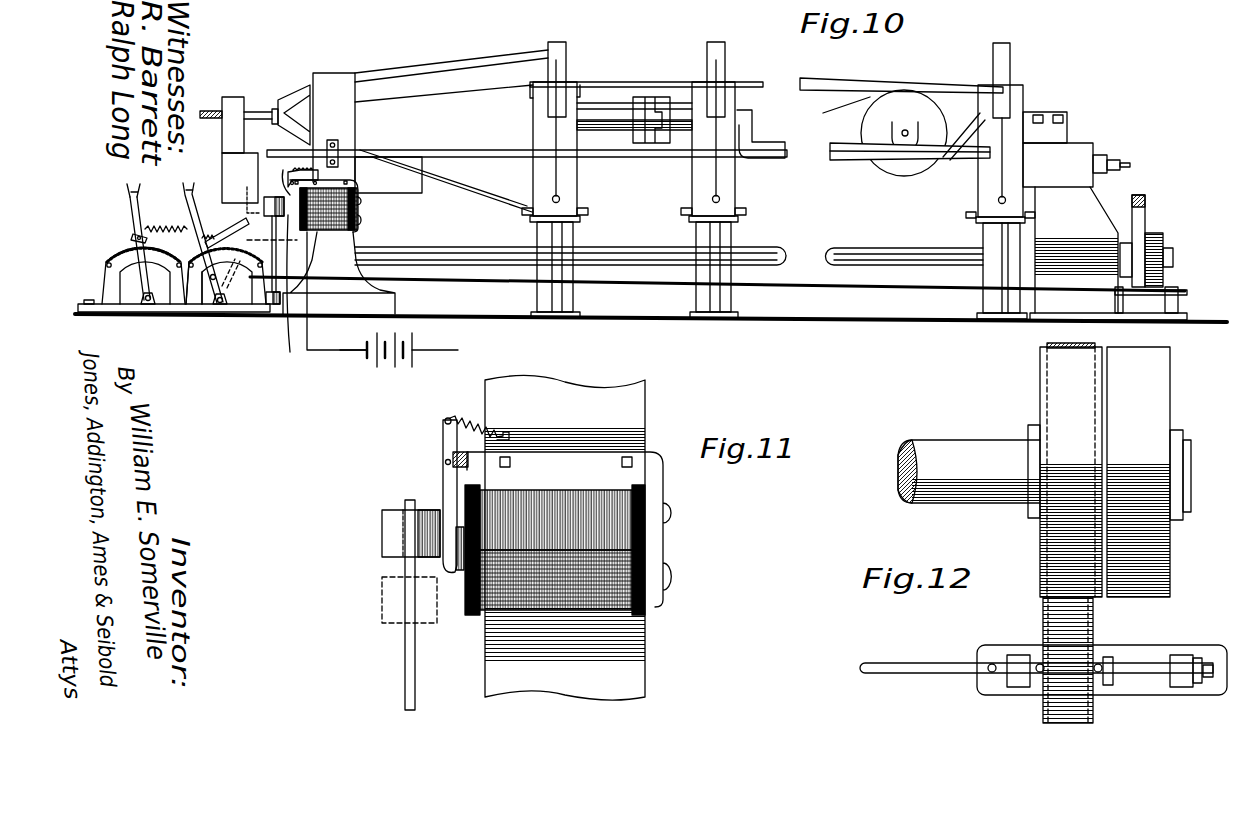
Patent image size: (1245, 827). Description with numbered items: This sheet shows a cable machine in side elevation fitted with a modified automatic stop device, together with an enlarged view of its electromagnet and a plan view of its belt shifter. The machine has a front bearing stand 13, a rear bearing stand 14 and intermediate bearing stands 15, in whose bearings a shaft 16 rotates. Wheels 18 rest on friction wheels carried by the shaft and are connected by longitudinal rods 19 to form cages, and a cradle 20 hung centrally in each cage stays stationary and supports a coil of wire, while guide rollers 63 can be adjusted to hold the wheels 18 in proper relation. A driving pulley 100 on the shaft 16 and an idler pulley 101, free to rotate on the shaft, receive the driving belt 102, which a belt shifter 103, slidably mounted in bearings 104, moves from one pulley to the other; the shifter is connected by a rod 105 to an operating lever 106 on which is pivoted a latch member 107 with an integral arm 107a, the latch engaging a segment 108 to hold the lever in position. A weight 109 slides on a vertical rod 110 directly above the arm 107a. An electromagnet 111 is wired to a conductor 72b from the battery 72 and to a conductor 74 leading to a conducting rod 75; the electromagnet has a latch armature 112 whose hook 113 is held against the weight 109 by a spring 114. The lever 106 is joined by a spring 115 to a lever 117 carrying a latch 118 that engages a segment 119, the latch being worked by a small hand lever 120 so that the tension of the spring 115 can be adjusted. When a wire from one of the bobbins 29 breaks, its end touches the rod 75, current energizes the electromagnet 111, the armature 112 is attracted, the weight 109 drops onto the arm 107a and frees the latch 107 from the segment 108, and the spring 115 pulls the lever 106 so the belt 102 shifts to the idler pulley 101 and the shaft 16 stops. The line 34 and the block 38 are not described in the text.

In FIG. 10, the front bearing stand 13 is at (339, 193).
In FIG. 11, the front bearing stand 13 is at (630, 658).
In FIG. 10, the rear bearing stand 14 is at (1105, 216).
In FIG. 10, the intermediate bearing stands 15 is at (573, 232).
In FIG. 10, the shaft 16 is at (862, 250).
In FIG. 12, the shaft 16 is at (945, 500).
In FIG. 10, the wheels 18 is at (723, 58).
In FIG. 10, the longitudinal rods 19 is at (854, 86).
In FIG. 10, the cradle 20 is at (852, 163).
In FIG. 10, the bobbins 29 is at (900, 170).
In FIG. 10, the line 34 is at (846, 115).
In FIG. 10, the block 38 is at (658, 97).
In FIG. 10, the guide rollers 63 is at (1010, 72).
In FIG. 10, the battery 72 is at (420, 341).
In FIG. 10, the conductor 72b is at (350, 352).
In FIG. 10, the conductor 74 is at (425, 186).
In FIG. 10, the rod 75 is at (612, 158).
In FIG. 10, the driving pulley 100 is at (1155, 233).
In FIG. 12, the driving pulley 100 is at (1138, 472).
In FIG. 12, the idler pulley 101 is at (1040, 390).
In FIG. 10, the driving belt 102 is at (1140, 195).
In FIG. 12, the belt shifter 103 is at (1135, 663).
In FIG. 10, the bearings 104 is at (1170, 312).
In FIG. 10, the rod 105 is at (897, 291).
In FIG. 10, the operating lever 106 is at (197, 290).
In FIG. 10, the latch member 107 is at (203, 246).
In FIG. 10, the arm 107a is at (227, 226).
In FIG. 10, the segment 108 is at (248, 263).
In FIG. 10, the weight 109 is at (208, 207).
In FIG. 11, the weight 109 is at (390, 522).
In FIG. 10, the vertical rod 110 is at (268, 307).
In FIG. 11, the vertical rod 110 is at (408, 608).
In FIG. 10, the electromagnet 111 is at (356, 213).
In FIG. 11, the electromagnet 111 is at (610, 532).
In FIG. 10, the latch armature 112 is at (291, 173).
In FIG. 11, the hook 113 is at (442, 565).
In FIG. 11, the spring 114 is at (467, 418).
In FIG. 10, the spring 115 is at (170, 218).
In FIG. 10, the lever 117 is at (140, 282).
In FIG. 10, the latch 118 is at (131, 240).
In FIG. 10, the segment 119 is at (163, 286).
In FIG. 10, the hand lever 120 is at (128, 196).